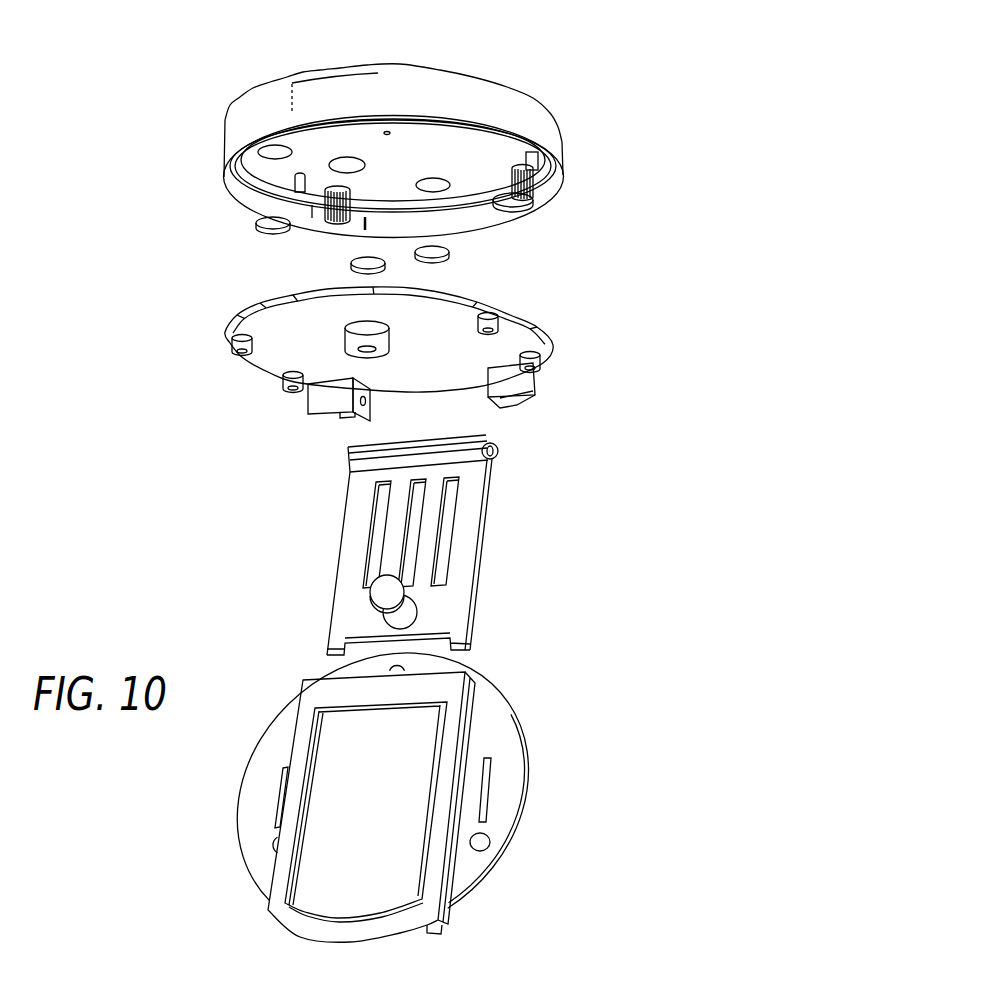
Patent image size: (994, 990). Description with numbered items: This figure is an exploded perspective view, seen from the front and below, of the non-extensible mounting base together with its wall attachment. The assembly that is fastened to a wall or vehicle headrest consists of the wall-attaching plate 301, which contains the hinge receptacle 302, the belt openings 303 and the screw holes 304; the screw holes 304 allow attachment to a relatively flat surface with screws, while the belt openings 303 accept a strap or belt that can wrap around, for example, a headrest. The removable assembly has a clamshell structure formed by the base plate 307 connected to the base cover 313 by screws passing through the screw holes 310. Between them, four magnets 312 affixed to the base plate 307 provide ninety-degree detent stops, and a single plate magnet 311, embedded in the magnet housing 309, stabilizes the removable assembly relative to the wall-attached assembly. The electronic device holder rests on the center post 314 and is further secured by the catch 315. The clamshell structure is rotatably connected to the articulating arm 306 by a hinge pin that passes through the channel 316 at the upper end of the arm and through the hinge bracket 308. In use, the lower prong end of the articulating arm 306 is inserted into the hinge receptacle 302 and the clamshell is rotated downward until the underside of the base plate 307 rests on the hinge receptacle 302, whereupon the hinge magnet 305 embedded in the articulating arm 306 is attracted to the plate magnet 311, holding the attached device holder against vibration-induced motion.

The wall-attaching plate 301 is at (250, 792).
The hinge receptacle 302 is at (440, 900).
The belt openings 303 is at (495, 772).
The screw holes 304 is at (495, 833).
The hinge magnet 305 is at (362, 590).
The articulating arm 306 is at (360, 522).
The base plate 307 is at (300, 331).
The hinge bracket 308 is at (542, 395).
The magnet housing 309 is at (370, 350).
The screw holes 310 is at (500, 330).
The plate magnet 311 is at (363, 255).
The magnets 312 is at (453, 255).
The base cover 313 is at (542, 135).
The center post 314 is at (537, 99).
The catch 315 is at (455, 71).
The channel 316 is at (497, 455).